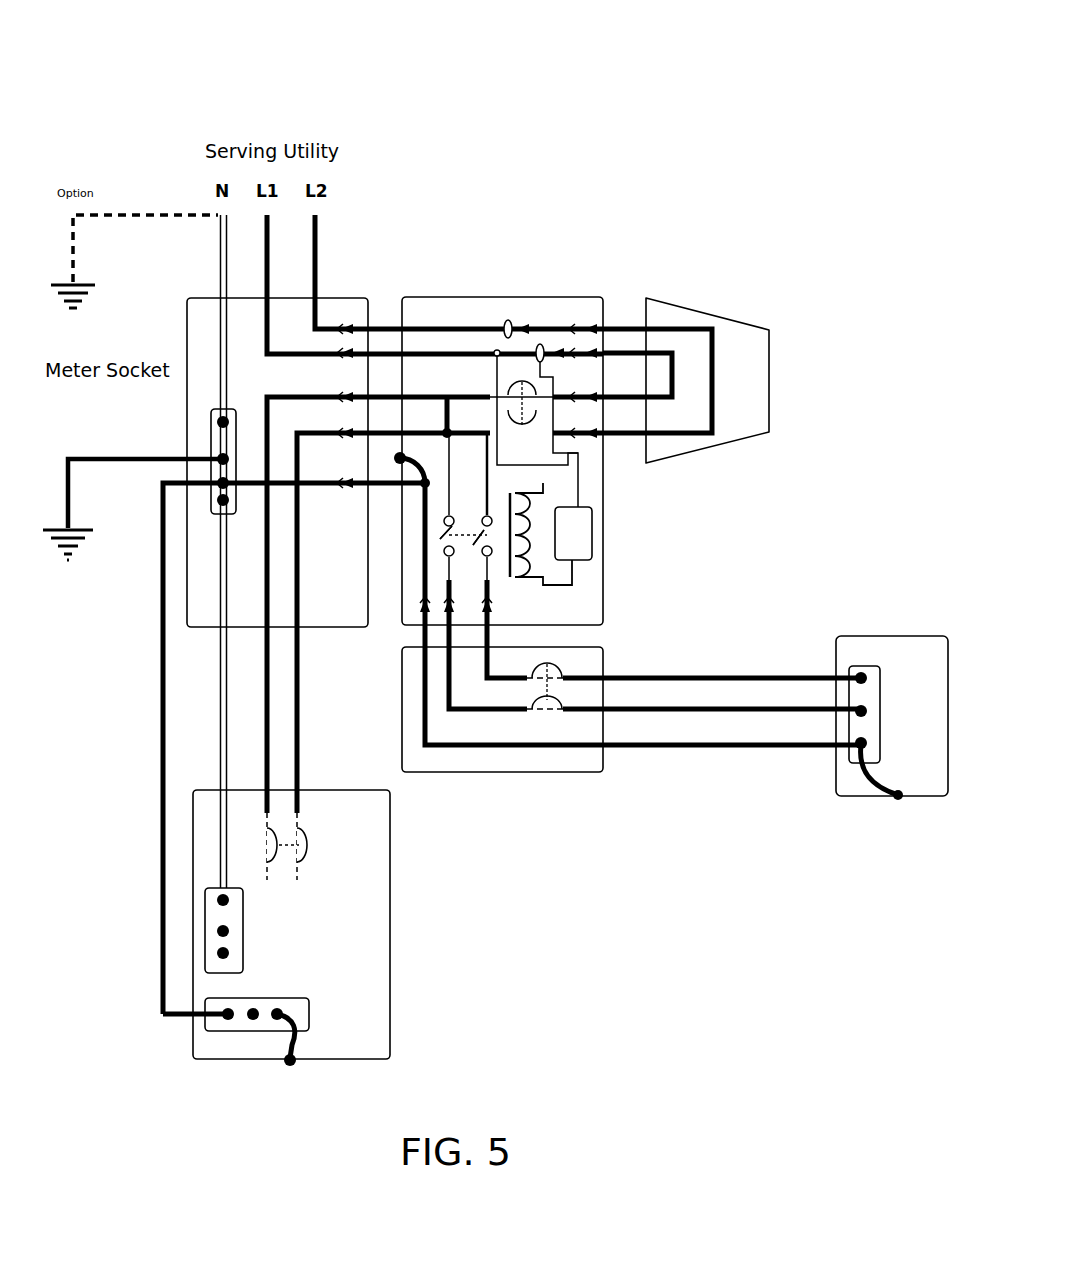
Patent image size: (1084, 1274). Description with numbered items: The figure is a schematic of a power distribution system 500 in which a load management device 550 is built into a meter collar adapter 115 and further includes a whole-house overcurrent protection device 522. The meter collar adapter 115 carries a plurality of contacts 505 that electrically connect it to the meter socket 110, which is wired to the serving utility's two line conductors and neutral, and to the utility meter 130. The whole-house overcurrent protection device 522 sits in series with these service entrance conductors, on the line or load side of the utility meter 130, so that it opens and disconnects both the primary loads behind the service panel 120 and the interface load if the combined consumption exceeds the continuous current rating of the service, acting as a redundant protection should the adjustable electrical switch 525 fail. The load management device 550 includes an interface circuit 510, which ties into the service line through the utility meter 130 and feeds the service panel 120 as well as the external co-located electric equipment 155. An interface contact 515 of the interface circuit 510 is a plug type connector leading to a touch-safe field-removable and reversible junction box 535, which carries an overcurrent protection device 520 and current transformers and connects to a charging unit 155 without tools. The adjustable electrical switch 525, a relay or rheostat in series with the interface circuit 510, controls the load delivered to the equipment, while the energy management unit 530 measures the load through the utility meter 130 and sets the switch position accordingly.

The power distribution system 500 is at (585, 134).
The meter socket 110 is at (336, 285).
The meter collar adapter 115 is at (612, 284).
The service panel 120 is at (392, 863).
The utility meter 130 is at (775, 318).
The co-located electric equipment 155 is at (863, 621).
The contacts 505 is at (361, 308).
The interface circuit 510 is at (451, 369).
The interface contact 515 is at (526, 604).
The overcurrent protection device 520 is at (556, 650).
The whole-house overcurrent protection device 522 is at (542, 400).
The adjustable electrical switch 525 is at (427, 562).
The energy management unit 530 is at (610, 536).
The touch-safe field-removable and reversible junction box 535 is at (583, 783).
The load management device 550 is at (736, 519).